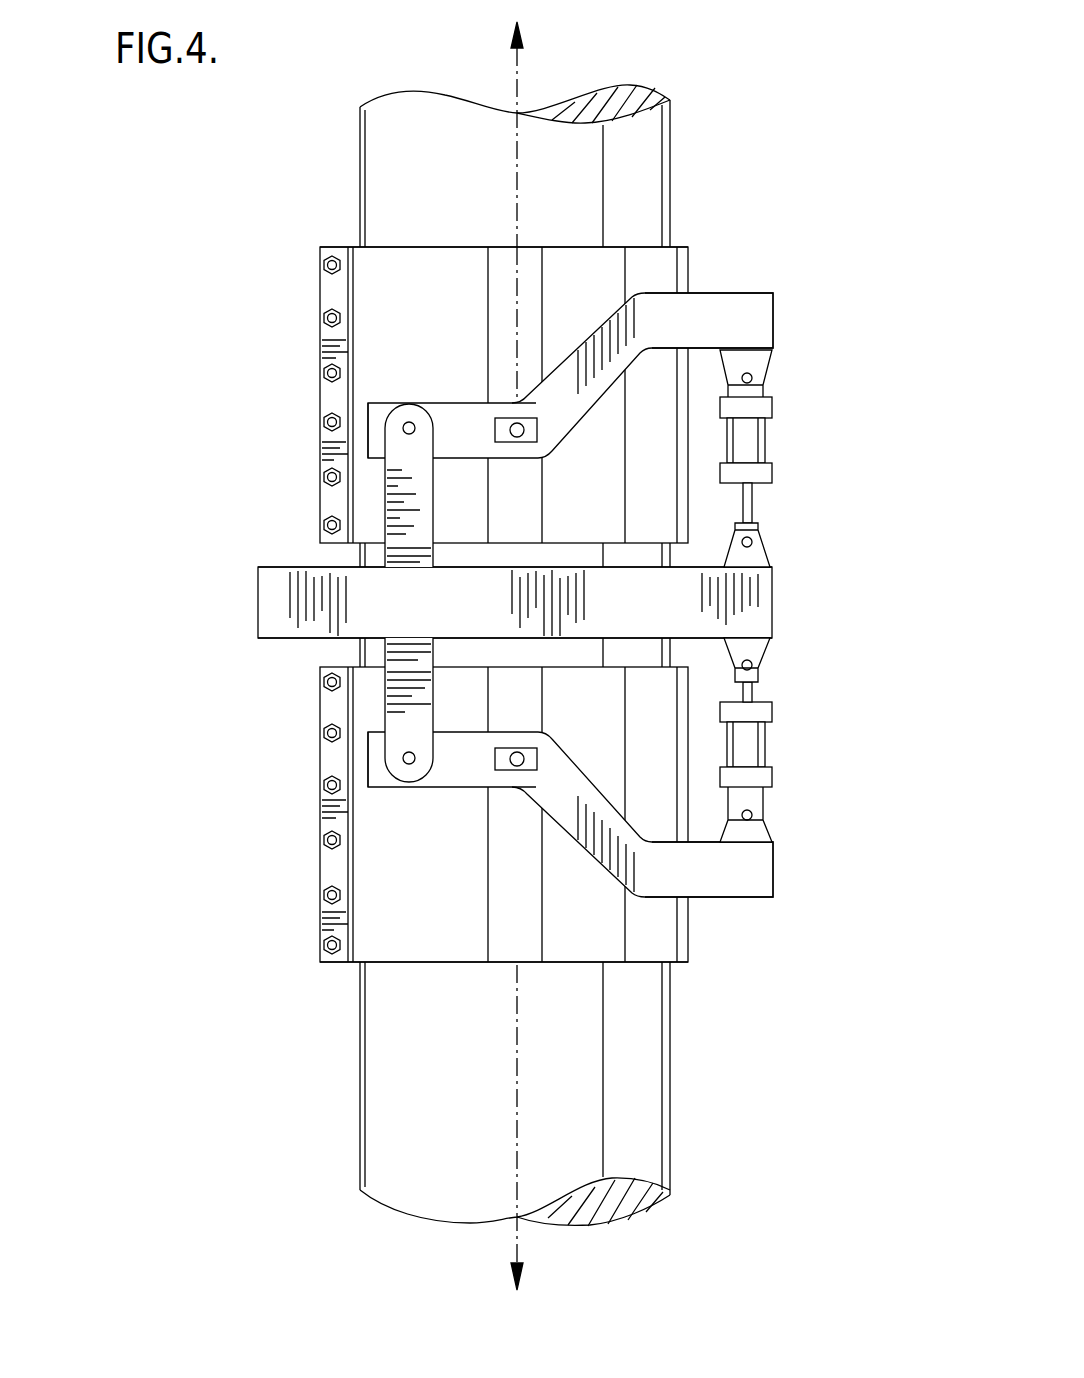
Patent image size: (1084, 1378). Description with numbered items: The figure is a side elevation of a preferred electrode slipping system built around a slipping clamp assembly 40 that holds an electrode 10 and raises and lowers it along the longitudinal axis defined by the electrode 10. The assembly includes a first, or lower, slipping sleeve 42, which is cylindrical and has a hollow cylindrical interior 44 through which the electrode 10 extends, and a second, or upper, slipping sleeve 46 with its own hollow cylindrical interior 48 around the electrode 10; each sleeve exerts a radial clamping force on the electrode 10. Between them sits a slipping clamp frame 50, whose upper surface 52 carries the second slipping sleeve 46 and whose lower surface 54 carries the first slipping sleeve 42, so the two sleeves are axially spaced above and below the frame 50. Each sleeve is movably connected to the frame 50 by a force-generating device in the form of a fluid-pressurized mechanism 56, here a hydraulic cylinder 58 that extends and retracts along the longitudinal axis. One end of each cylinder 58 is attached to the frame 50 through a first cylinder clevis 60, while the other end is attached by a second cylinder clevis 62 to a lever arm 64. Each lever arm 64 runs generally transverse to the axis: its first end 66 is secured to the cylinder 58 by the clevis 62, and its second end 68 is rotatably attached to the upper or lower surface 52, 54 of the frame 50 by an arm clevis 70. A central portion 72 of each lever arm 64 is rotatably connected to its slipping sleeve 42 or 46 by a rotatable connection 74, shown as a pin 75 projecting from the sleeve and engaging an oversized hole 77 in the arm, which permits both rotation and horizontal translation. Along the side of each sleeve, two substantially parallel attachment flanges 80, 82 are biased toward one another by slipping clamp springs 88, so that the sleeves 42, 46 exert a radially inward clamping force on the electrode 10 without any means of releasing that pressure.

The electrode 10 is at (655, 1083).
The slipping clamp assembly 40 is at (157, 983).
The first slipping sleeve 42 is at (668, 913).
The hollow cylindrical interior 44 is at (345, 965).
The second slipping sleeve 46 is at (398, 268).
The hollow cylindrical interior 48 is at (350, 247).
The slipping clamp frame 50 is at (790, 600).
The upper surface 52 is at (270, 567).
The lower surface 54 is at (268, 640).
The fluid-pressurized mechanism 56 is at (808, 592).
The hydraulic cylinder 58 is at (768, 433).
The first cylinder clevis 60 is at (786, 472).
The second cylinder clevis 62 is at (757, 380).
The lever arm 64 is at (618, 588).
The first end 66 is at (745, 298).
The second end 68 is at (388, 403).
The arm clevis 70 is at (412, 490).
The central portion 72 is at (592, 405).
The rotatable connection 74 is at (527, 418).
The pin 75 is at (517, 437).
The oversized hole 77 is at (493, 422).
The attachment flange 80 is at (320, 448).
The attachment flange 82 is at (322, 757).
The slipping clamp spring 88 is at (325, 478).